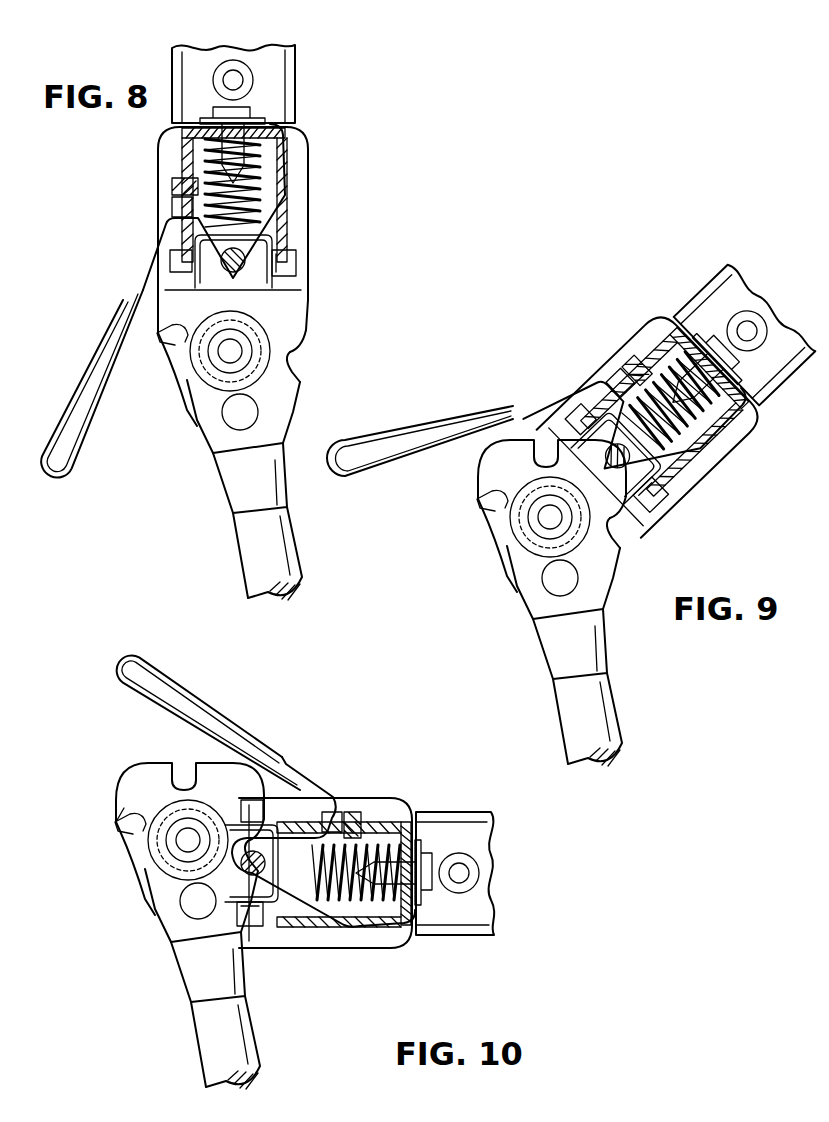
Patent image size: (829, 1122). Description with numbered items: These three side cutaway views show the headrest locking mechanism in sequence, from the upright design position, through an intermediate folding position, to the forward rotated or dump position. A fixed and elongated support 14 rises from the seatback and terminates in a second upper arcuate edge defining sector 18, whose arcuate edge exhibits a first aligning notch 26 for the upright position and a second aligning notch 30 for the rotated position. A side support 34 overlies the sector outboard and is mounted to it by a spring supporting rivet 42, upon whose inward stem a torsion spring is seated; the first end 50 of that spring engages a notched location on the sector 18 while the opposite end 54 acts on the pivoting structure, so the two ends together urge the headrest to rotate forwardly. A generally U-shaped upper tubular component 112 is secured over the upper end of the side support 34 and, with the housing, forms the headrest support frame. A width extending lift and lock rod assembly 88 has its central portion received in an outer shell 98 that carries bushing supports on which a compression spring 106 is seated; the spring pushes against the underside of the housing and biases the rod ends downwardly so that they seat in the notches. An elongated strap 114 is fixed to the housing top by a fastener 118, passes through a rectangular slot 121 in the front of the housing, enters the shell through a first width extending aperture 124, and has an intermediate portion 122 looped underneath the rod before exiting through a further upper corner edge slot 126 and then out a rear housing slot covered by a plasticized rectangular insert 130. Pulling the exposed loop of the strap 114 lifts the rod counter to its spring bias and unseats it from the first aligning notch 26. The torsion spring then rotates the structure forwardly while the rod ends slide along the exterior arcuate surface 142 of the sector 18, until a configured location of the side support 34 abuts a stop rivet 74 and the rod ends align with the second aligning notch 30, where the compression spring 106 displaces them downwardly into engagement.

In FIG. 8, the fixed and elongated support 14 is at (248, 567).
In FIG. 9, the fixed and elongated support 14 is at (567, 722).
In FIG. 10, the fixed and elongated support 14 is at (210, 1060).
In FIG. 8, the second upper arcuate edge defining sector 18 is at (212, 413).
In FIG. 9, the second upper arcuate edge defining sector 18 is at (547, 593).
In FIG. 10, the second upper arcuate edge defining sector 18 is at (188, 937).
In FIG. 8, the first aligning notch 26 is at (277, 297).
In FIG. 9, the first aligning notch 26 is at (517, 437).
In FIG. 10, the first aligning notch 26 is at (180, 780).
In FIG. 8, the second aligning notch 30 is at (293, 373).
In FIG. 9, the second aligning notch 30 is at (620, 550).
In FIG. 8, the side support 34 is at (302, 223).
In FIG. 9, the side support 34 is at (603, 370).
In FIG. 10, the side support 34 is at (342, 790).
In FIG. 8, the spring supporting rivet 42 is at (230, 352).
In FIG. 9, the spring supporting rivet 42 is at (547, 517).
In FIG. 10, the spring supporting rivet 42 is at (188, 840).
In FIG. 8, the first end of torsion spring 50 is at (160, 342).
In FIG. 9, the first end of torsion spring 50 is at (480, 502).
In FIG. 10, the first end of torsion spring 50 is at (120, 830).
In FIG. 10, the opposite end of torsion spring 54 is at (127, 812).
In FIG. 8, the stop rivet 74 is at (248, 413).
In FIG. 9, the stop rivet 74 is at (552, 578).
In FIG. 10, the stop rivet 74 is at (190, 900).
In FIG. 8, the lift and lock rod assembly 88 is at (260, 267).
In FIG. 9, the lift and lock rod assembly 88 is at (612, 453).
In FIG. 10, the lift and lock rod assembly 88 is at (248, 850).
In FIG. 8, the outer shell 98 is at (213, 275).
In FIG. 9, the outer shell 98 is at (640, 523).
In FIG. 10, the outer shell 98 is at (240, 920).
In FIG. 8, the compression spring 106 is at (253, 160).
In FIG. 9, the compression spring 106 is at (680, 370).
In FIG. 10, the compression spring 106 is at (367, 847).
In FIG. 8, the upper tubular component 112 is at (262, 62).
In FIG. 9, the upper tubular component 112 is at (778, 345).
In FIG. 10, the upper tubular component 112 is at (485, 862).
In FIG. 8, the strap 114 is at (50, 435).
In FIG. 9, the strap 114 is at (367, 442).
In FIG. 10, the strap 114 is at (147, 658).
In FIG. 8, the fastener 118 is at (227, 110).
In FIG. 9, the fastener 118 is at (742, 320).
In FIG. 10, the fastener 118 is at (440, 867).
In FIG. 8, the rectangular slot 121 is at (287, 200).
In FIG. 9, the rectangular slot 121 is at (707, 448).
In FIG. 10, the rectangular slot 121 is at (333, 937).
In FIG. 8, the intermediate portion of strap 122 is at (242, 297).
In FIG. 9, the intermediate portion of strap 122 is at (580, 420).
In FIG. 10, the intermediate portion of strap 122 is at (213, 833).
In FIG. 8, the first width extending aperture 124 is at (270, 257).
In FIG. 9, the first width extending aperture 124 is at (663, 477).
In FIG. 10, the first width extending aperture 124 is at (273, 903).
In FIG. 8, the upper corner edge slot 126 is at (167, 217).
In FIG. 9, the upper corner edge slot 126 is at (597, 370).
In FIG. 10, the upper corner edge slot 126 is at (278, 827).
In FIG. 8, the plasticized rectangular insert 130 is at (170, 187).
In FIG. 9, the plasticized rectangular insert 130 is at (632, 363).
In FIG. 10, the plasticized rectangular insert 130 is at (357, 807).
In FIG. 8, the exterior arcuate surface 142 is at (303, 333).
In FIG. 9, the exterior arcuate surface 142 is at (615, 508).
In FIG. 10, the exterior arcuate surface 142 is at (217, 770).